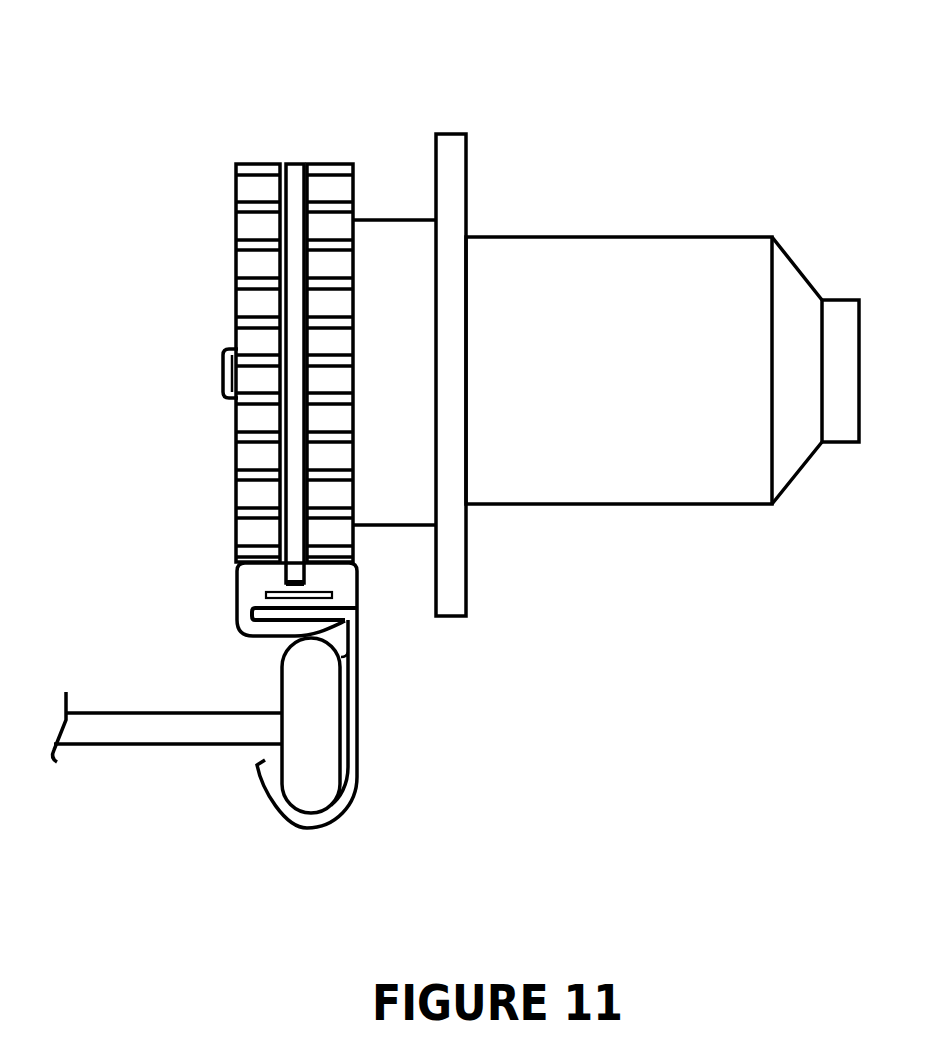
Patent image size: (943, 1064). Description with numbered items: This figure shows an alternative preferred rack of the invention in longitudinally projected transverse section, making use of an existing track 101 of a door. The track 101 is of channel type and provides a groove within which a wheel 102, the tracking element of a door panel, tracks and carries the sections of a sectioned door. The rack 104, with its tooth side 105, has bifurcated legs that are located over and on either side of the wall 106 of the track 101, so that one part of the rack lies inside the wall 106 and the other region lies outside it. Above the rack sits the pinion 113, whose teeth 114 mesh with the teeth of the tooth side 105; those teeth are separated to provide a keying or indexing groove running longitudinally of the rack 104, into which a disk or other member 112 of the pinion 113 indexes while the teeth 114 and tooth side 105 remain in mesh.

The track 101 is at (360, 733).
The wheel 102 is at (300, 797).
The rack 104 is at (238, 606).
The tooth side 105 is at (208, 568).
The wall 106 is at (343, 603).
The disk 112 is at (293, 172).
The pinion 113 is at (195, 253).
The teeth of the pinion 114 is at (335, 190).